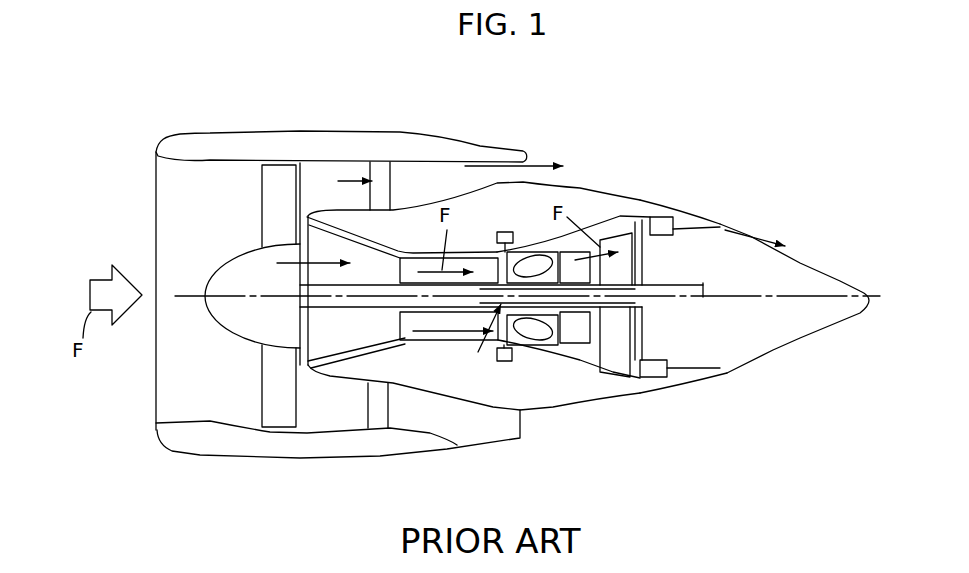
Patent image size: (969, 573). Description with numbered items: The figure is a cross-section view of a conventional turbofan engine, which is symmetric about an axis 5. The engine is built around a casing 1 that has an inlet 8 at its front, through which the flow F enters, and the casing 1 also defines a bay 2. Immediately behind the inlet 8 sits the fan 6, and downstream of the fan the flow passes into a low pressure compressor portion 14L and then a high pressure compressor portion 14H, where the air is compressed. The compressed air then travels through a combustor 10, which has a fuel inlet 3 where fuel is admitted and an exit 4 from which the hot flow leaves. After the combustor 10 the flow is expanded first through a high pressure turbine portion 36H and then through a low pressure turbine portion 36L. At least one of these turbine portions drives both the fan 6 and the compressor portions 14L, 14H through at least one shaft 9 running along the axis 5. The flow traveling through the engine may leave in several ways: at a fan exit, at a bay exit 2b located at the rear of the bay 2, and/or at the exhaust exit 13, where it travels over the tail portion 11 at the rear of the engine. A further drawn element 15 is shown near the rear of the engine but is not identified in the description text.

The turbofan engine nacelle 1 is at (180, 444).
The core engine cowl 2 is at (589, 179).
The rear part of core cowl 2b is at (647, 197).
The high-pressure body 3 is at (497, 357).
The low-pressure body 4 is at (545, 355).
The low-pressure shaft 5 is at (700, 278).
The fan 6 is at (280, 178).
The air inlet 8 is at (156, 386).
The primary flow stream 9 is at (400, 310).
The combustion chamber 10 is at (528, 340).
The exhaust nozzle plug 11 is at (805, 262).
The primary nozzle 13 is at (730, 375).
The low-pressure compressor 14L is at (333, 250).
The high-pressure compressor 14H is at (433, 325).
The turbine exhaust casing 15 is at (650, 388).
The high-pressure turbine 36H is at (572, 343).
The low-pressure turbine 36L is at (620, 352).